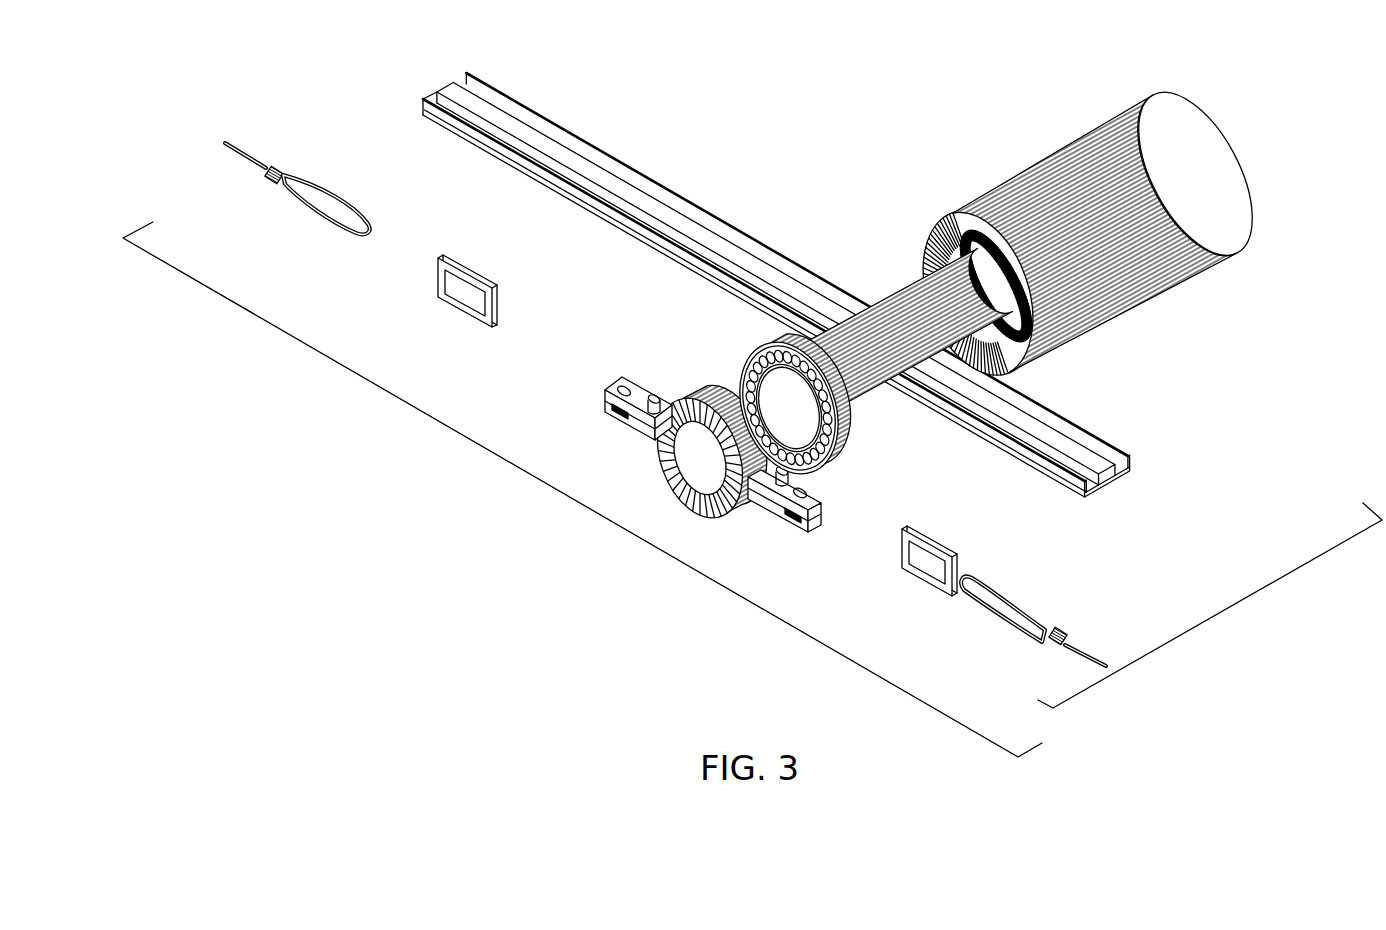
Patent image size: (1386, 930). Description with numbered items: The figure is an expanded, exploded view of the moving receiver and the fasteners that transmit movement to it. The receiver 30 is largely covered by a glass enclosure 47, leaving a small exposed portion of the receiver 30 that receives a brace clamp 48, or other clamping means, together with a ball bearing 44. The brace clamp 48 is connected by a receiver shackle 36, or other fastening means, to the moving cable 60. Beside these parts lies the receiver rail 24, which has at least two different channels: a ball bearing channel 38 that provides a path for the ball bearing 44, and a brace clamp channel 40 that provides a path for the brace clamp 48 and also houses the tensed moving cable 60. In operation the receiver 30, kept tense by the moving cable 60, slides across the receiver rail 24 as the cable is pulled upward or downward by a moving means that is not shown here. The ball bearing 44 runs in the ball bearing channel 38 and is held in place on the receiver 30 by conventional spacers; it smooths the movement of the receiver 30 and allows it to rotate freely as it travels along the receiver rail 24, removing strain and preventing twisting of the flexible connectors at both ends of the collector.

The receiver rail 24 is at (865, 260).
The receiver 30 is at (912, 305).
The receiver shackle 36 is at (943, 543).
The ball bearing channel 38 is at (1108, 452).
The brace clamp channel 40 is at (1132, 458).
The ball bearing 44 is at (750, 347).
The glass enclosure 47 is at (1100, 148).
The brace clamp 48 is at (667, 463).
The moving cable 60 is at (1012, 595).